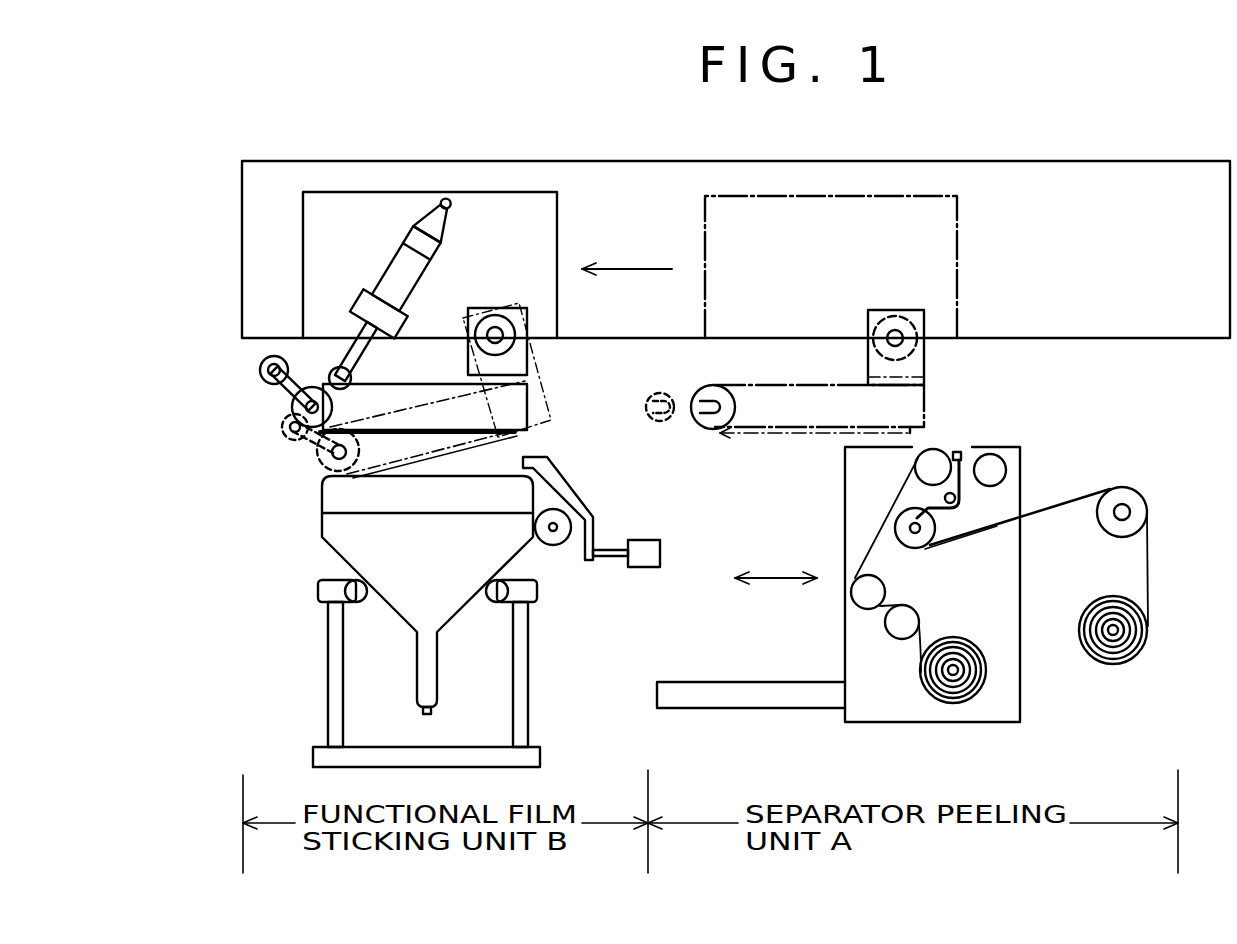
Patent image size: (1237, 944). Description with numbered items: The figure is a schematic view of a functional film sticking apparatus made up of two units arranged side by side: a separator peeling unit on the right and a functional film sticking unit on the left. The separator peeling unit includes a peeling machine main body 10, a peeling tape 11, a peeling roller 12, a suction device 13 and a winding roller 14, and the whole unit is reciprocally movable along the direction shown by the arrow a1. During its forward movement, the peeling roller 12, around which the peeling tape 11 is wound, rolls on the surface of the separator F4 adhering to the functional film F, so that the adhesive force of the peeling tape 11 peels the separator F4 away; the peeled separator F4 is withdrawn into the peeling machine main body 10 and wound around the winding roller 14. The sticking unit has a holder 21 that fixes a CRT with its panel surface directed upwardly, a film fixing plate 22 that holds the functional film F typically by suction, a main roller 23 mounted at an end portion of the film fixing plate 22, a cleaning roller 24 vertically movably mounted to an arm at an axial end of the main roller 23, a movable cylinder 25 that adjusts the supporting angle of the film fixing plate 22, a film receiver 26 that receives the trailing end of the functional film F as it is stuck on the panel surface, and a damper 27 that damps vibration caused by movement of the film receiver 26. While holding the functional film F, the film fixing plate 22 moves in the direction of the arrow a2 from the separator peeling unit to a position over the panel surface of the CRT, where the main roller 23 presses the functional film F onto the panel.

The peeling machine main body 10 is at (1020, 716).
The peeling tape 11 is at (893, 503).
The peeling roller 12 is at (932, 462).
The suction device 13 is at (990, 463).
The winding roller 14 is at (1148, 633).
The holder 21 is at (318, 593).
The film fixing plate 22 is at (413, 403).
The main roller 23 is at (293, 407).
The cleaning roller 24 is at (262, 362).
The movable cylinder 25 is at (383, 272).
The film receiver 26 is at (567, 472).
The damper 27 is at (642, 557).
The element CRT is at (355, 528).
The functional film F is at (480, 423).
The separator F4 is at (993, 518).
The arrow a1 is at (757, 578).
The arrow a2 is at (637, 269).